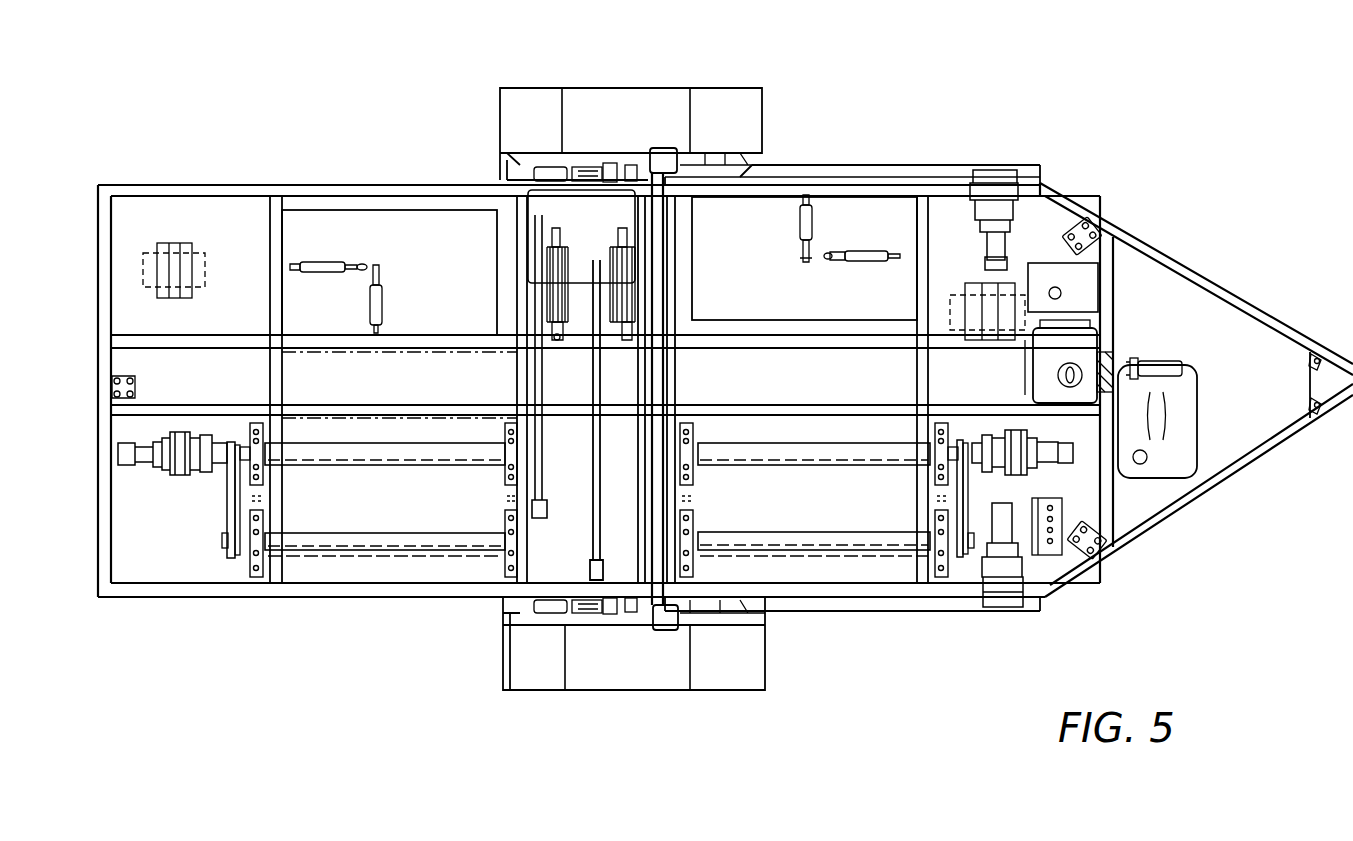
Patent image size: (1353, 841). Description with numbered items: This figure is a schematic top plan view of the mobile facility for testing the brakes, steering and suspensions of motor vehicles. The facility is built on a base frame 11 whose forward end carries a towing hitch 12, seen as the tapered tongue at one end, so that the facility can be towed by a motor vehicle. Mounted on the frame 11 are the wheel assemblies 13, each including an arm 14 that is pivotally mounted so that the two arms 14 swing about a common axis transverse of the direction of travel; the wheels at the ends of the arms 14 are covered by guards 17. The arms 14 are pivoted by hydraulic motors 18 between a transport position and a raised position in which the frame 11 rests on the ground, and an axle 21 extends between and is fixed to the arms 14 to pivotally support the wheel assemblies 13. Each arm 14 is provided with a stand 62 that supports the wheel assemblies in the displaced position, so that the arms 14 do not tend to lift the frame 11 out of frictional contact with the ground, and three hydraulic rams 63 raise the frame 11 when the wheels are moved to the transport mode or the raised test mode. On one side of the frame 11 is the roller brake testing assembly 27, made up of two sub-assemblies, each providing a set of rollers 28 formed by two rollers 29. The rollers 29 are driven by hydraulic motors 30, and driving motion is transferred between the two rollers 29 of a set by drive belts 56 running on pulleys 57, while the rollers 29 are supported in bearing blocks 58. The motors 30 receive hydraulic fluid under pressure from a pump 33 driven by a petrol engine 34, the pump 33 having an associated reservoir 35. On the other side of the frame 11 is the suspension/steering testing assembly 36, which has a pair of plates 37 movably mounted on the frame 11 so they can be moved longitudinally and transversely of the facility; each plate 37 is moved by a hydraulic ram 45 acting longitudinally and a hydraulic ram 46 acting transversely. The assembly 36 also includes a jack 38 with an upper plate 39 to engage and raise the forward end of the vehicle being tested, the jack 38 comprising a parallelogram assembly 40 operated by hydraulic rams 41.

The base frame 11 is at (388, 185).
The towing hitch 12 is at (1196, 388).
The wheel assembly 13 is at (632, 394).
The arm 14 is at (790, 170).
The guard 17 is at (645, 103).
The hydraulic motor 18 is at (1000, 210).
The axle 21 is at (668, 380).
The roller brake testing assembly 27 is at (571, 656).
The set of rollers 28 is at (598, 605).
The roller 29 is at (395, 540).
The hydraulic motor 30 is at (165, 473).
The pump 33 is at (1160, 362).
The petrol engine 34 is at (1085, 357).
The reservoir 35 is at (1085, 292).
The suspension/steering testing assembly 36 is at (569, 133).
The plate 37 is at (456, 308).
The jack 38 is at (404, 382).
The upper plate 39 is at (515, 240).
The parallelogram assembly 40 is at (593, 468).
The hydraulic ram 41 is at (618, 250).
The hydraulic ram 45 is at (318, 265).
The hydraulic ram 46 is at (370, 302).
The drive belt 56 is at (232, 515).
The pulley 57 is at (227, 465).
The bearing block 58 is at (265, 478).
The stand 62 is at (668, 158).
The hydraulic ram 63 is at (1080, 235).